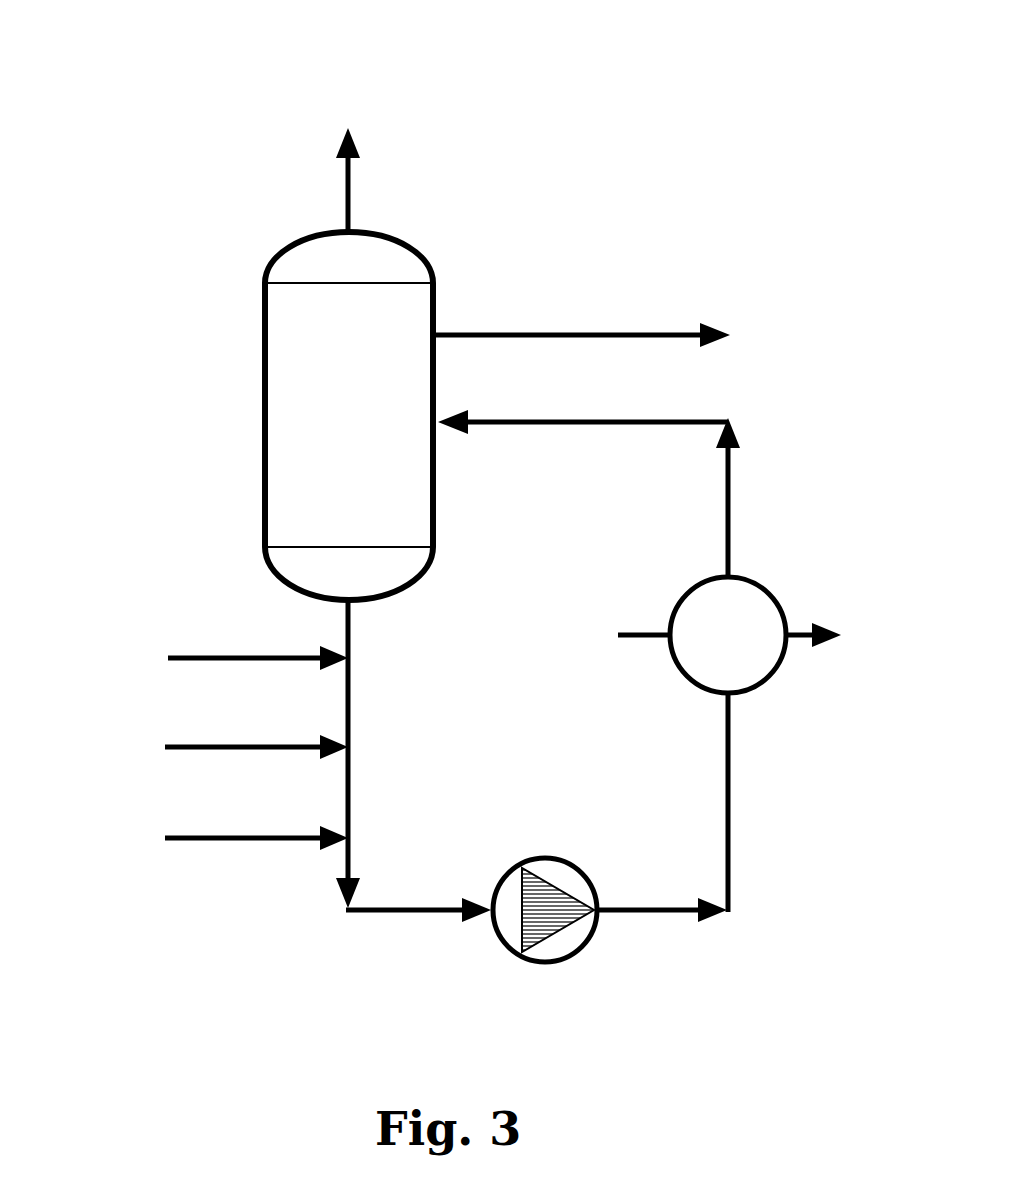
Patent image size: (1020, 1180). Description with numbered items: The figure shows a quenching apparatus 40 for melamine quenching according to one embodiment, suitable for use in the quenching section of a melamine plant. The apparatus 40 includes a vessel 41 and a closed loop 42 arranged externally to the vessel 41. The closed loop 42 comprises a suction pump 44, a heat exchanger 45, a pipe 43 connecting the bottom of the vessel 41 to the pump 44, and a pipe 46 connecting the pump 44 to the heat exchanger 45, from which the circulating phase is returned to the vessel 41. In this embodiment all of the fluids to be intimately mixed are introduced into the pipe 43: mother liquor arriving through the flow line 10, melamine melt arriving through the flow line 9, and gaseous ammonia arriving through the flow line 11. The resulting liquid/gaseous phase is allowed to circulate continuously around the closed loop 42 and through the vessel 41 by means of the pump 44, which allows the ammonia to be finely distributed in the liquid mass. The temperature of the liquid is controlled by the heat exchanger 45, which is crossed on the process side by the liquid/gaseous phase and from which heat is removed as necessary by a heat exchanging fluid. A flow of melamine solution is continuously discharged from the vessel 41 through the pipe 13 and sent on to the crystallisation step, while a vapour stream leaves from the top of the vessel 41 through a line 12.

The quenching apparatus 40 is at (680, 129).
The vessel 41 is at (262, 420).
The overhead vapor outlet stream 12 is at (342, 193).
The pipe 13 is at (630, 330).
The flow line 9 is at (185, 743).
The flow line 10 is at (188, 653).
The flow line 11 is at (188, 837).
The closed loop 42 is at (738, 501).
The pipe 43 is at (352, 793).
The suction pump 44 is at (563, 930).
The heat exchanger 45 is at (775, 592).
The pipe 46 is at (733, 807).